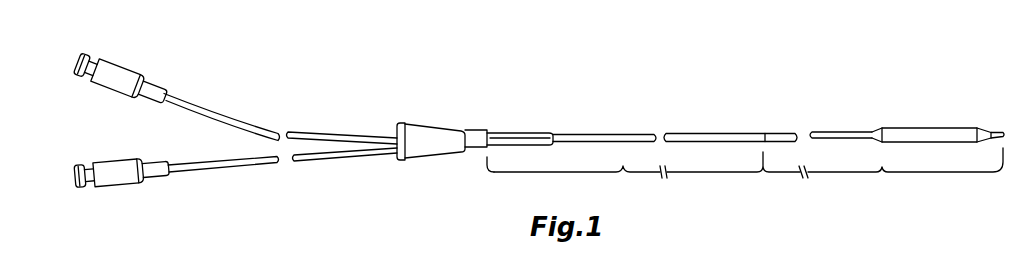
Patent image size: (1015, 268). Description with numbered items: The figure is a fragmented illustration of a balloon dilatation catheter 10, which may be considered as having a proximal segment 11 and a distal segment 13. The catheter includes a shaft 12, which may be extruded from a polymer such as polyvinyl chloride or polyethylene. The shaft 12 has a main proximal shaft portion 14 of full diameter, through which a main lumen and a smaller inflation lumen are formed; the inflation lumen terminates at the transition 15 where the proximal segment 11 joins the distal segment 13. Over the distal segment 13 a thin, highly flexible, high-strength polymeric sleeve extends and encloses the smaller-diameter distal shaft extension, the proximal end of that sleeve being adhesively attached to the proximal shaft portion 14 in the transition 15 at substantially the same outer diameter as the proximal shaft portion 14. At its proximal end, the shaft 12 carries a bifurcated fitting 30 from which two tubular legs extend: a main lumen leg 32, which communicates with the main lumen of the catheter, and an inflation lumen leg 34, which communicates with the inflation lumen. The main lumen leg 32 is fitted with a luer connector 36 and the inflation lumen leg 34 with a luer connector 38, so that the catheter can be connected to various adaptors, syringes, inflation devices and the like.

The balloon dilatation catheter 10 is at (607, 174).
The proximal segment 11 is at (577, 180).
The shaft 12 is at (622, 132).
The distal segment 13 is at (906, 161).
The proximal shaft portion 14 is at (577, 132).
The transition 15 is at (765, 132).
The bifurcated fitting 30 is at (447, 129).
The main lumen leg 32 is at (242, 165).
The inflation lumen leg 34 is at (228, 119).
The luer connector 36 is at (122, 191).
The luer connector 38 is at (124, 97).